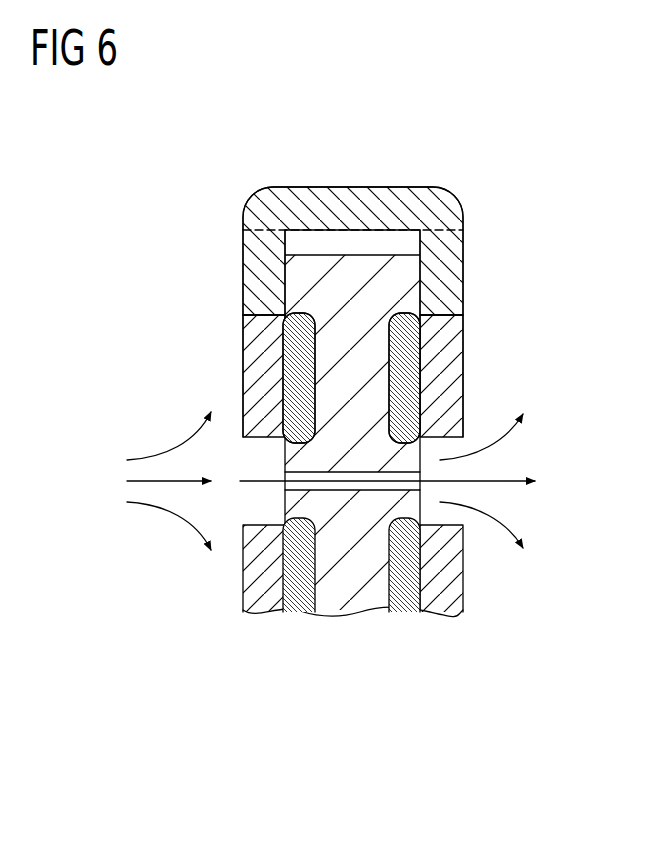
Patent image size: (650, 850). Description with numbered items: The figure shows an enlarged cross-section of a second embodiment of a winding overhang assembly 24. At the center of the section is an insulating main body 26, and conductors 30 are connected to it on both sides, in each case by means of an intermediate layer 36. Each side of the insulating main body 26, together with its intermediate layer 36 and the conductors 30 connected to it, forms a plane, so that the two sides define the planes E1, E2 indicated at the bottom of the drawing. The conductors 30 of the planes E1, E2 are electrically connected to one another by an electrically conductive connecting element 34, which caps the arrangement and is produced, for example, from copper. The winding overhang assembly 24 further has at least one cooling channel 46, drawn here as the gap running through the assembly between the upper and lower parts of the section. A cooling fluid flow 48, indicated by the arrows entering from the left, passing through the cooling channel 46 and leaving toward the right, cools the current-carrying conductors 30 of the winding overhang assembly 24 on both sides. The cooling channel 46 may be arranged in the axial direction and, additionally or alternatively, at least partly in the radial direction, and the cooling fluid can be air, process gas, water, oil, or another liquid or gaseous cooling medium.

The winding overhang assembly 24 is at (487, 114).
The insulating main body 26 is at (325, 281).
The conductor 30 is at (283, 343).
The electrically conductive connecting element 34 is at (355, 188).
The intermediate layer 36 is at (293, 383).
The cooling channel 46 is at (401, 487).
The fluid flow 48 is at (111, 482).
The plane E1 is at (302, 637).
The plane E2 is at (398, 637).